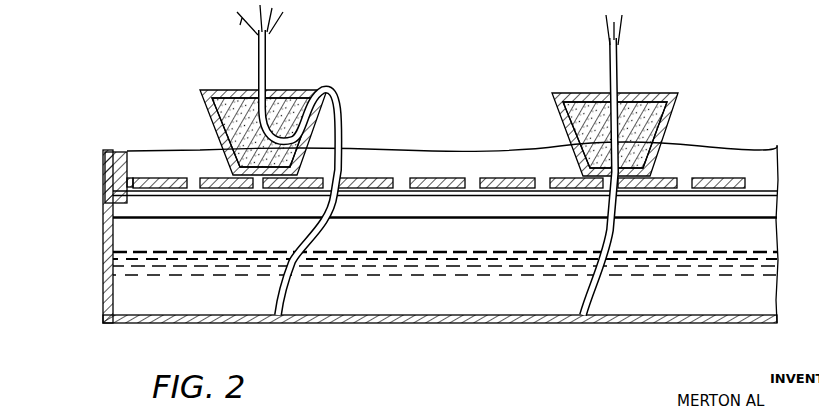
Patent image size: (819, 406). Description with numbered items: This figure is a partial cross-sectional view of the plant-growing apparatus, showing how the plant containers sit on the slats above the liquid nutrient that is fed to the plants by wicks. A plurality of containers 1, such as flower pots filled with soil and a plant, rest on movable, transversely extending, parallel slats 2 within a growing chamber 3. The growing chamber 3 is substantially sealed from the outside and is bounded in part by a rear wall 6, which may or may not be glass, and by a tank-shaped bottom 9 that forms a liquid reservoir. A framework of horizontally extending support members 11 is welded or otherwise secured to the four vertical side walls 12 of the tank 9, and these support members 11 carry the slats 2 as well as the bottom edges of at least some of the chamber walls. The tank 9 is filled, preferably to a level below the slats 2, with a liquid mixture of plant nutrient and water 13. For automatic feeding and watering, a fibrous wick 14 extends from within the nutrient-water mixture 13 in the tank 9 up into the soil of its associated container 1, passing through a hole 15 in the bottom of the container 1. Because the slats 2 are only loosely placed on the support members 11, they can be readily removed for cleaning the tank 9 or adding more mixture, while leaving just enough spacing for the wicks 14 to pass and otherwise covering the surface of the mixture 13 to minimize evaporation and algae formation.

The container 1 is at (205, 110).
The slat 2 is at (373, 180).
The growing chamber 3 is at (447, 119).
The rear wall 6 is at (122, 150).
The tank-shaped bottom 9 is at (745, 298).
The support member 11 is at (120, 203).
The side wall 12 is at (107, 283).
The liquid mixture of plant nutrient and water 13 is at (432, 300).
The fibrous wick 14 is at (340, 103).
The hole 15 is at (607, 178).